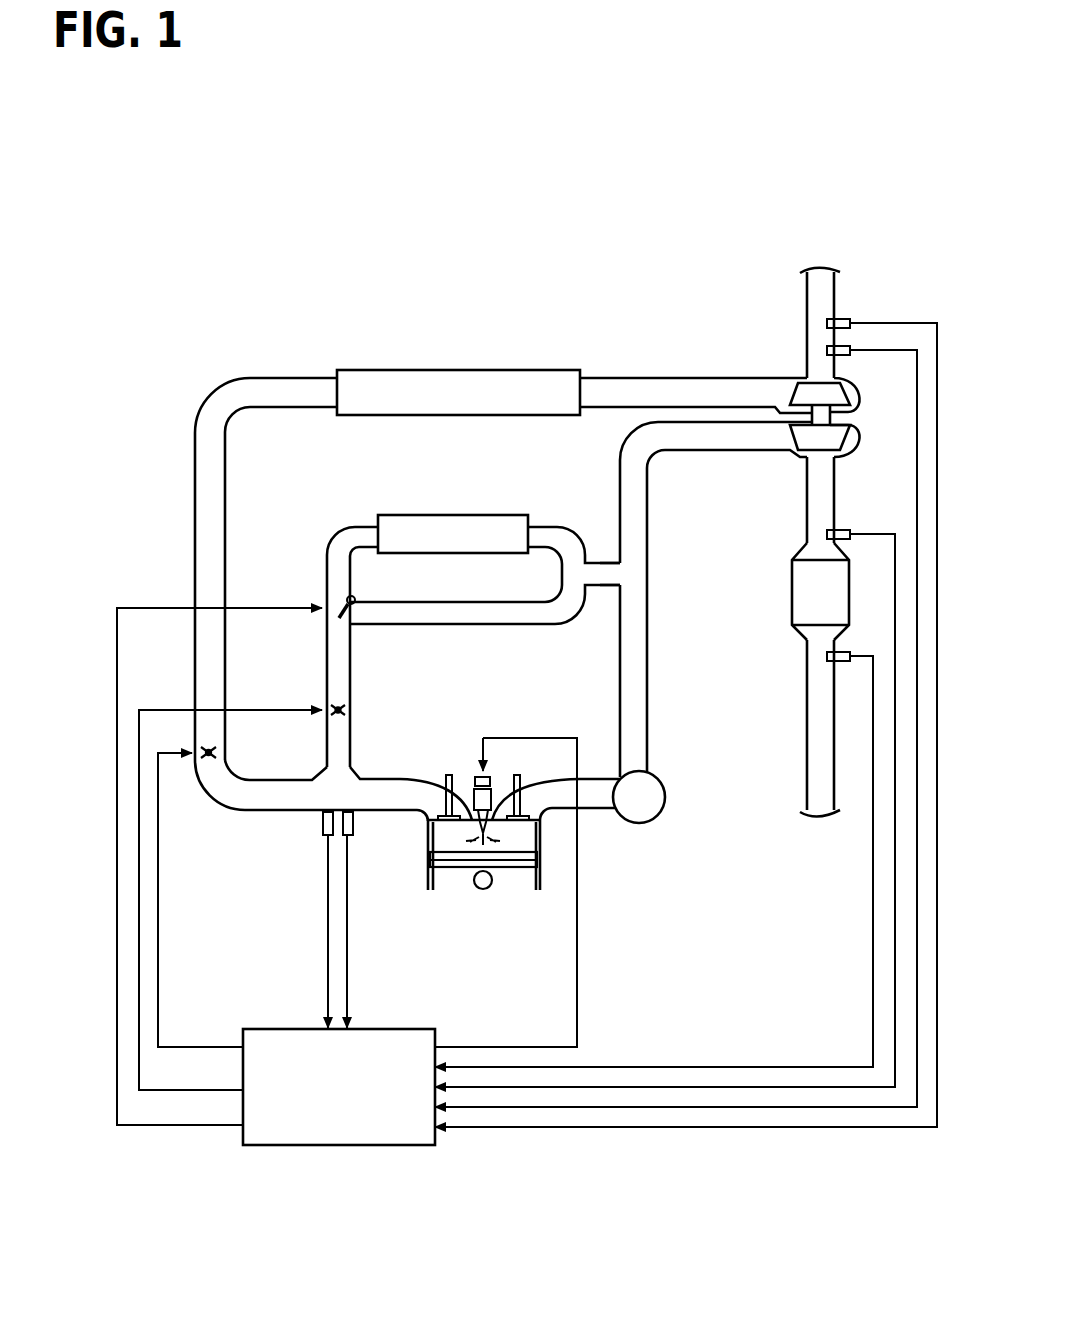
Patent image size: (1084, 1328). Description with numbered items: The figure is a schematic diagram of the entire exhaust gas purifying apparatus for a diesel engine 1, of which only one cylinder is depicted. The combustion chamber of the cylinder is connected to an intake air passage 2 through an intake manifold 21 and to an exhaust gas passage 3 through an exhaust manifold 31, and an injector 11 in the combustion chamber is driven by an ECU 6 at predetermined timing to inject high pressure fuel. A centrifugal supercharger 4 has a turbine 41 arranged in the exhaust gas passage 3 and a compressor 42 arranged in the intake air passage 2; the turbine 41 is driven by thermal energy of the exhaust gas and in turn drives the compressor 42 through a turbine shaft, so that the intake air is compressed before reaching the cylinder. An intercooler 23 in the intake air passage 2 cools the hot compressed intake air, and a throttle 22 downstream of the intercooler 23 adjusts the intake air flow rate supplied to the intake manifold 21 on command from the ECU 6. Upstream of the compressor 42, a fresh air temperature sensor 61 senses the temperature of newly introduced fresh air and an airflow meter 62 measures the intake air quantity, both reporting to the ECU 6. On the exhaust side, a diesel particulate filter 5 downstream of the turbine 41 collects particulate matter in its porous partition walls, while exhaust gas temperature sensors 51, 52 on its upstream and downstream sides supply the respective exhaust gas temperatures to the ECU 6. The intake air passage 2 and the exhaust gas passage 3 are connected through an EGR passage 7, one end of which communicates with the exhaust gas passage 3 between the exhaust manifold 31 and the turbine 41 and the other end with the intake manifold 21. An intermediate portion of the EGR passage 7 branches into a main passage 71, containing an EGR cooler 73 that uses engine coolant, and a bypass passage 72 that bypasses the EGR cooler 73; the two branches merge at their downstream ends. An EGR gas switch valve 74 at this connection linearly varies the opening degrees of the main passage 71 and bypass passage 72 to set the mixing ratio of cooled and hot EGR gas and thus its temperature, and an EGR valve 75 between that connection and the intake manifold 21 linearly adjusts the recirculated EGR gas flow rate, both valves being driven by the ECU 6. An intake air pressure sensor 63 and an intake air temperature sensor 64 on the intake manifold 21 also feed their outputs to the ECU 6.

The diesel engine 1 is at (704, 845).
The intake air passage 2 is at (195, 492).
The intake manifold 21 is at (333, 792).
The throttle 22 is at (210, 760).
The intercooler 23 is at (383, 370).
The exhaust gas passage 3 is at (650, 497).
The exhaust manifold 31 is at (635, 825).
The centrifugal supercharger 4 is at (721, 357).
The turbine 41 is at (812, 438).
The compressor 42 is at (812, 392).
The diesel particulate filter (DPF) 5 is at (792, 600).
The exhaust gas temperature sensor 51 is at (826, 531).
The exhaust gas temperature sensor 52 is at (827, 656).
The ECU 6 is at (340, 1146).
The fresh air temperature sensor 61 is at (845, 320).
The airflow meter 62 is at (822, 347).
The intake air pressure sensor 63 is at (333, 838).
The intake air temperature sensor 64 is at (352, 838).
The EGR passage 7 is at (602, 570).
The main passage 71 is at (540, 537).
The bypass passage 72 is at (552, 617).
The EGR cooler 73 is at (455, 515).
The EGR gas switch valve 74 is at (333, 597).
The EGR valve 75 is at (344, 710).
The injector 11 is at (474, 780).